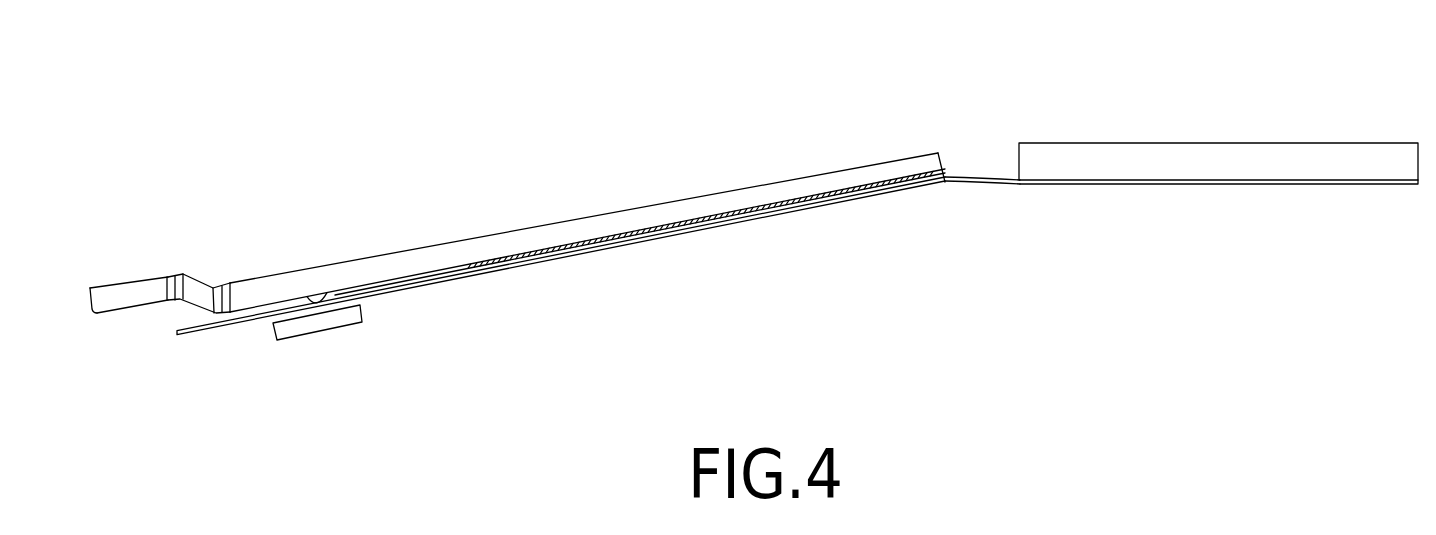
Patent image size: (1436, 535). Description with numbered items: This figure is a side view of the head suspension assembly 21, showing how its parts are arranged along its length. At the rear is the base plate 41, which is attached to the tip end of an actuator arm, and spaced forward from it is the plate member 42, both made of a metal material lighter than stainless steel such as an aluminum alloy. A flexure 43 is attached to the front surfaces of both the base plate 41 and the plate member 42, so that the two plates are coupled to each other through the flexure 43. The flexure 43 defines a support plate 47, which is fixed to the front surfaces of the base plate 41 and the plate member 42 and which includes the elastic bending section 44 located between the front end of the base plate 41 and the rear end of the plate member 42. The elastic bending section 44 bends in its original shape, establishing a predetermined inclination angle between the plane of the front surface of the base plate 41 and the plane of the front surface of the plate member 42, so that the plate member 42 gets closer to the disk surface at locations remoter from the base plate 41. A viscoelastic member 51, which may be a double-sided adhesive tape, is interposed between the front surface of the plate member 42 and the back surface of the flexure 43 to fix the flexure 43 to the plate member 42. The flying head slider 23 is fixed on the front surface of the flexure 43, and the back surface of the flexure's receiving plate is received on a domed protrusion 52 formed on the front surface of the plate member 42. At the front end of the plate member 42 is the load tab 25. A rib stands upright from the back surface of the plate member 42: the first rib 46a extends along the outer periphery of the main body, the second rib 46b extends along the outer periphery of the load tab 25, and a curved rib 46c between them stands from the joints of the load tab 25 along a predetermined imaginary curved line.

The head suspension assembly 21 is at (573, 109).
The flying head slider 23 is at (302, 337).
The load tab 25 is at (103, 313).
The base plate 41 is at (1320, 144).
The plate member 42 is at (792, 180).
The flexure 43 is at (1145, 185).
The elastic bending section 44 is at (988, 185).
The first rib 46a is at (595, 215).
The second rib 46b is at (105, 285).
The curved rib 46c is at (182, 272).
The support plate 47 is at (523, 265).
The viscoelastic member 51 is at (945, 182).
The domed protrusion 52 is at (333, 295).